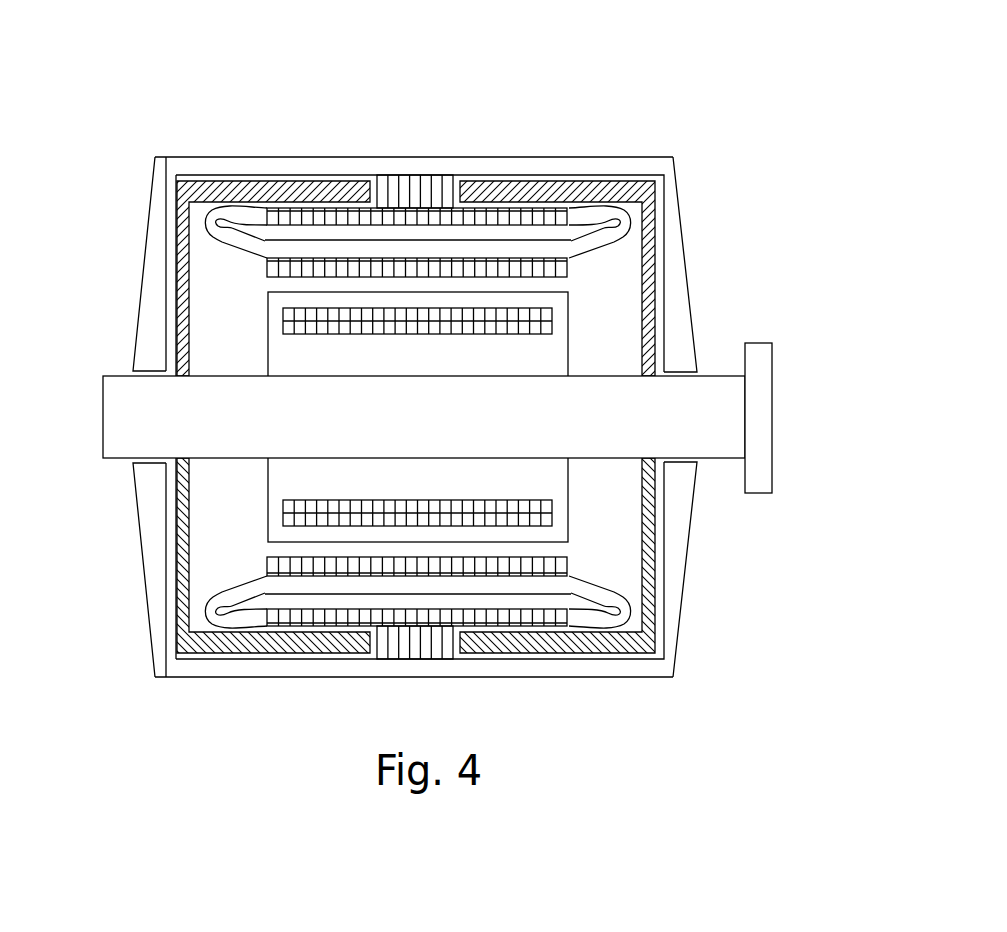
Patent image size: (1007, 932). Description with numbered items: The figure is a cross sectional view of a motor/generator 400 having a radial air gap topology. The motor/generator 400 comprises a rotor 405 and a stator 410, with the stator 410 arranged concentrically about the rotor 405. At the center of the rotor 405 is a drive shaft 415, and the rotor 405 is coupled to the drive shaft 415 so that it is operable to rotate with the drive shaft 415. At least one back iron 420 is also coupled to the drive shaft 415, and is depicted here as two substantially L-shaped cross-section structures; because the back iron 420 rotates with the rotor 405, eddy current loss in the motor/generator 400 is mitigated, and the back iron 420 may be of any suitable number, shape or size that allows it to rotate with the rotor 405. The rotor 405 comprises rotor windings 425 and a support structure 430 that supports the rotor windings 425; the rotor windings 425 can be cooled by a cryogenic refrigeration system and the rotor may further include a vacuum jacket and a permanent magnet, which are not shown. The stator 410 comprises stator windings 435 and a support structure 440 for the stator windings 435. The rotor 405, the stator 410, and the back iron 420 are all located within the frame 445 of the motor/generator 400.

The motor/generator 400 is at (571, 56).
The rotor 405 is at (580, 333).
The stator 410 is at (582, 260).
The drive shaft 415 is at (767, 408).
The back iron 420 is at (177, 182).
The rotor windings 425 is at (293, 327).
The support structure 430 is at (287, 359).
The stator windings 435 is at (623, 620).
The support structure 440 is at (562, 563).
The frame 445 is at (153, 522).